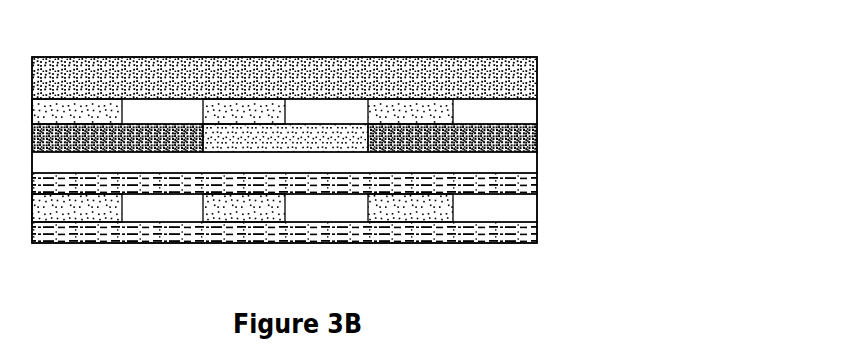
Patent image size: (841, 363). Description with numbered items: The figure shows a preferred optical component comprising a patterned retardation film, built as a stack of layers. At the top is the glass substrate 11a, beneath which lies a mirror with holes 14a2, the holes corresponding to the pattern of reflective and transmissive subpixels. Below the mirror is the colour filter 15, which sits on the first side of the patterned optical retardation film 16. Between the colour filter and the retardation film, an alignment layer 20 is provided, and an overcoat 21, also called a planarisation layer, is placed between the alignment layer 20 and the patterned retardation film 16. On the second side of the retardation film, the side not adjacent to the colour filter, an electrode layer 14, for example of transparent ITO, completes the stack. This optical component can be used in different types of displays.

The first substrate layer 11a is at (537, 72).
The mirror with holes 14a2 is at (537, 120).
The colour filter 15 is at (537, 139).
The overcoat 21 is at (537, 167).
The alignment layer 20 is at (537, 183).
The patterned optical retardation film 16 is at (537, 215).
The electrode layer 14 is at (537, 231).